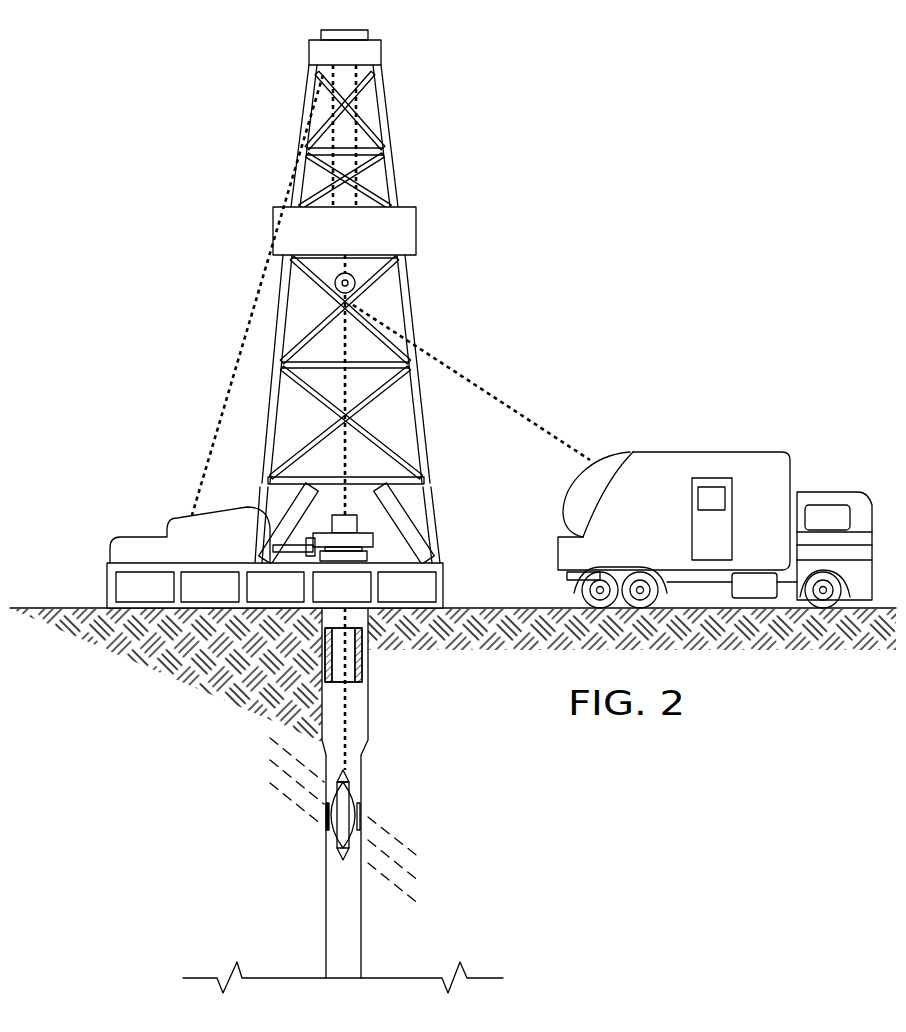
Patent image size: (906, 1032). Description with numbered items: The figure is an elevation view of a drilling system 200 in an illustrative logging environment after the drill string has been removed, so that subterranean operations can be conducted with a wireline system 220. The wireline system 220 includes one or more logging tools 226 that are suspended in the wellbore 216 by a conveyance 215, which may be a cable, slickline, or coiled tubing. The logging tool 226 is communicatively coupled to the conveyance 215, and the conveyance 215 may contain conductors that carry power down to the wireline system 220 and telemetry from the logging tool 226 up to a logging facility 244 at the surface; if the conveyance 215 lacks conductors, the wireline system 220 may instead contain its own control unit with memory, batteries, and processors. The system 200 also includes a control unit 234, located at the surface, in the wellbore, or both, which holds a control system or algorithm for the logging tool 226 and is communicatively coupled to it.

The drilling system 200 is at (594, 239).
The conveyance 215 is at (347, 663).
The wellbore 216 is at (358, 725).
The wireline system 220 is at (342, 800).
The logging tool 226 is at (332, 817).
The control unit 234 is at (357, 522).
The logging facility 244 is at (712, 452).